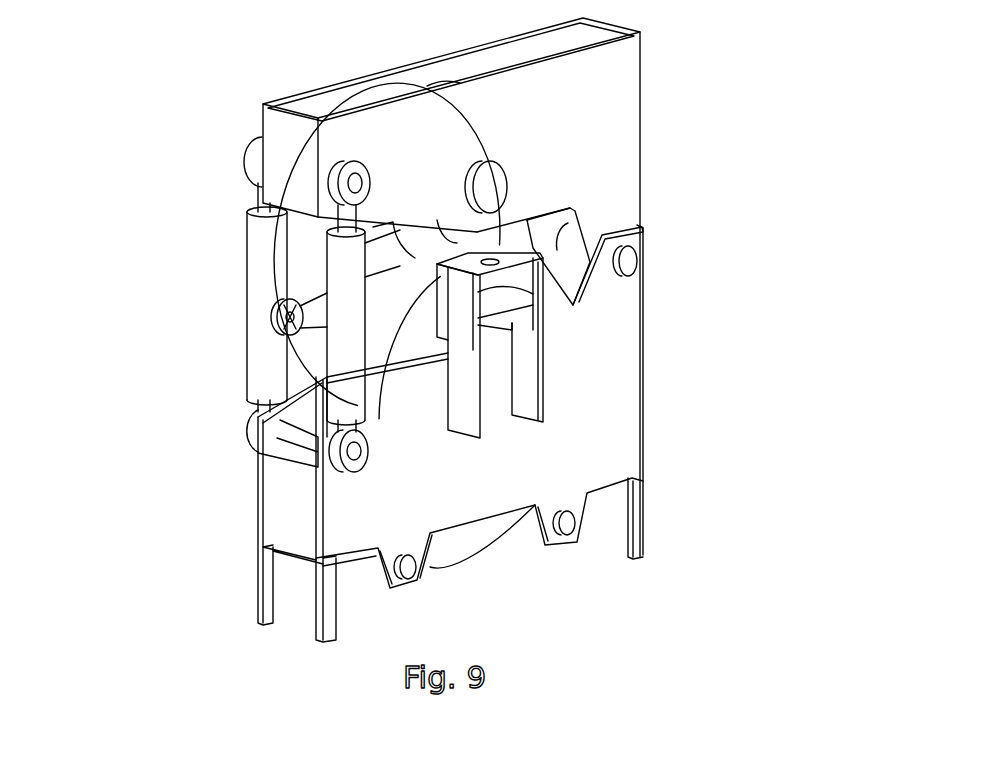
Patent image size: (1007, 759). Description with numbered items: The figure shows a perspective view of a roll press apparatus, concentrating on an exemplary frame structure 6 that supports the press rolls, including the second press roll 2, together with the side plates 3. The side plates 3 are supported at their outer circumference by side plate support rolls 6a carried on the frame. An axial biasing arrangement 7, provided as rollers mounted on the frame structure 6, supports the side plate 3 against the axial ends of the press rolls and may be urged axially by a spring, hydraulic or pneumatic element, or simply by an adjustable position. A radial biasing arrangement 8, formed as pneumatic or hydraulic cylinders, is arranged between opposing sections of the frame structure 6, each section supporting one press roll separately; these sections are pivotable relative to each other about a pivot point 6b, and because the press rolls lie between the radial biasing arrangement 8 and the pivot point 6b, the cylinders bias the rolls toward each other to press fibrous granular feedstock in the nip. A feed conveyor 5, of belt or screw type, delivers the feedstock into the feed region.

The second press roll 2 is at (423, 243).
The side plates 3 is at (385, 356).
The feed conveyor 5 is at (273, 313).
The frame structure 6 is at (637, 198).
The side plate support rolls 6a is at (452, 568).
The pivot point 6b is at (628, 261).
The axial biasing arrangement 7 is at (510, 292).
The radial biasing arrangement 8 is at (335, 250).